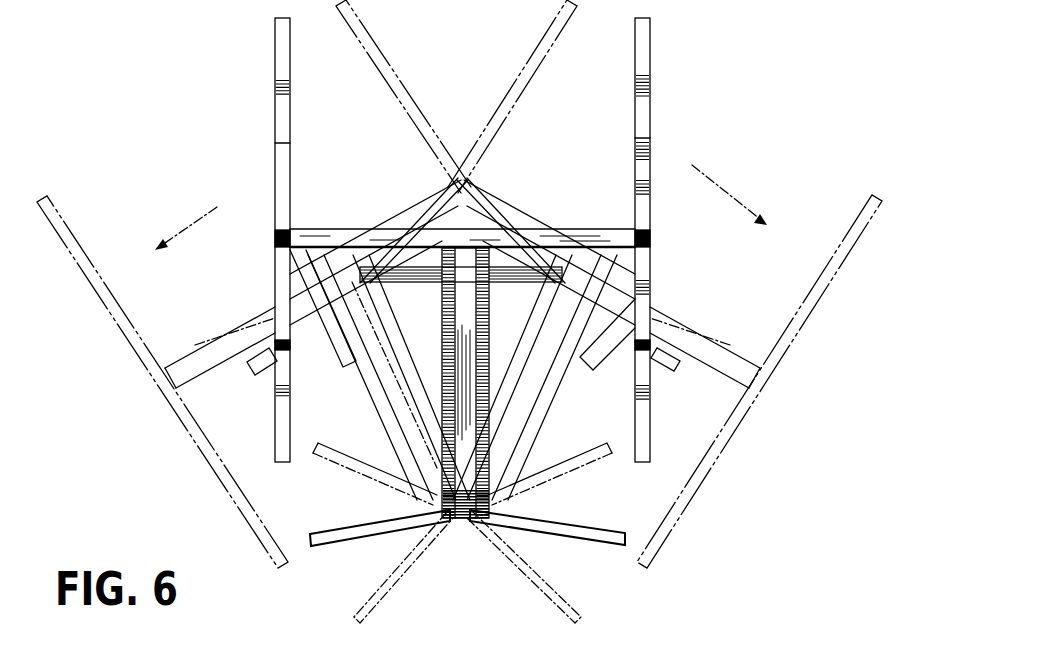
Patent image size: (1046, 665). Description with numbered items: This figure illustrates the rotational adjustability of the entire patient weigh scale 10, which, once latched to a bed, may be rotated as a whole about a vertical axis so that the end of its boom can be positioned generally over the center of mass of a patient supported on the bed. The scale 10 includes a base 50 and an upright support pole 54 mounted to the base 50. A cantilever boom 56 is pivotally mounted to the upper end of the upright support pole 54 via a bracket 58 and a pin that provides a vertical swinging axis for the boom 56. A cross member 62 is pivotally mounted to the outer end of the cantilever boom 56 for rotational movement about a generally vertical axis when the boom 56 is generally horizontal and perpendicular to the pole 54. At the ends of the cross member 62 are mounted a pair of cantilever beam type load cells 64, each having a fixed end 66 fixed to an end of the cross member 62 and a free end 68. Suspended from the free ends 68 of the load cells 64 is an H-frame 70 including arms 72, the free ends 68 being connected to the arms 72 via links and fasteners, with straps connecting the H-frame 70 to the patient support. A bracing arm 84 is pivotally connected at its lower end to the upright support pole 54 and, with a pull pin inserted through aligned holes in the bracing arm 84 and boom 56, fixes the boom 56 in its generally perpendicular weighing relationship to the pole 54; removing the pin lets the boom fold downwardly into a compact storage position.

The patient weigh scale 10 is at (505, 210).
The base 50 is at (551, 482).
The upright support pole 54 is at (463, 532).
The cantilever boom 56 is at (372, 402).
The bracket 58 is at (536, 452).
The cross member 62 is at (607, 229).
The load cell 64 is at (296, 167).
The fixed end 66 is at (274, 232).
The free end 68 is at (275, 150).
The H-frame 70 is at (657, 33).
The arm 72 is at (710, 442).
The bracing arm 84 is at (413, 400).